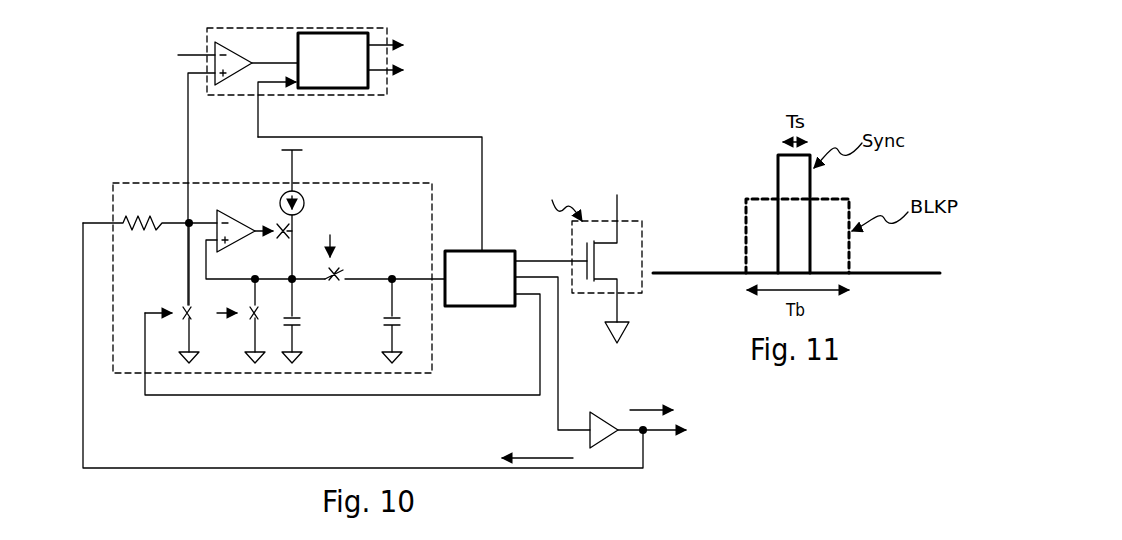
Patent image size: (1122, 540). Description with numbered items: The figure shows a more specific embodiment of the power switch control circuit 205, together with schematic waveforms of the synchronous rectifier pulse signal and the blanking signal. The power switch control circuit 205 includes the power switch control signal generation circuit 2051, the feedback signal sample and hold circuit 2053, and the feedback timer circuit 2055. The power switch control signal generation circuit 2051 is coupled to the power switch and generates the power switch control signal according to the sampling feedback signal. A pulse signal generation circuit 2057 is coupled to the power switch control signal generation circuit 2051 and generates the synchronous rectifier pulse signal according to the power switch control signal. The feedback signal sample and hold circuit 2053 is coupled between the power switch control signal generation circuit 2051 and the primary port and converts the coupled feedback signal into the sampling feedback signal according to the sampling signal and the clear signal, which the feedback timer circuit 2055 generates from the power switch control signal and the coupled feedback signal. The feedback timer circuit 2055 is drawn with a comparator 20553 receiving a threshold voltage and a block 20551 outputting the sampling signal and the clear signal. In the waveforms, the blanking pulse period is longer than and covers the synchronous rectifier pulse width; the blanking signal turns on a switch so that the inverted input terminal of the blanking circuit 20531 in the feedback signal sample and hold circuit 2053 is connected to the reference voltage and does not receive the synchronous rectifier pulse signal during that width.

The power switch control circuit 205 is at (572, 107).
The comparator 20553 is at (233, 43).
The timing/logic unit 20551 is at (358, 70).
The feedback timer circuit 2055 is at (344, 98).
The feedback signal sample and hold (S/H) circuit 2053 is at (425, 212).
The blanking circuit 20531 is at (230, 208).
The power switch control signal generation circuit 2051 is at (502, 292).
The pulse signal generation circuit 2057 is at (600, 413).